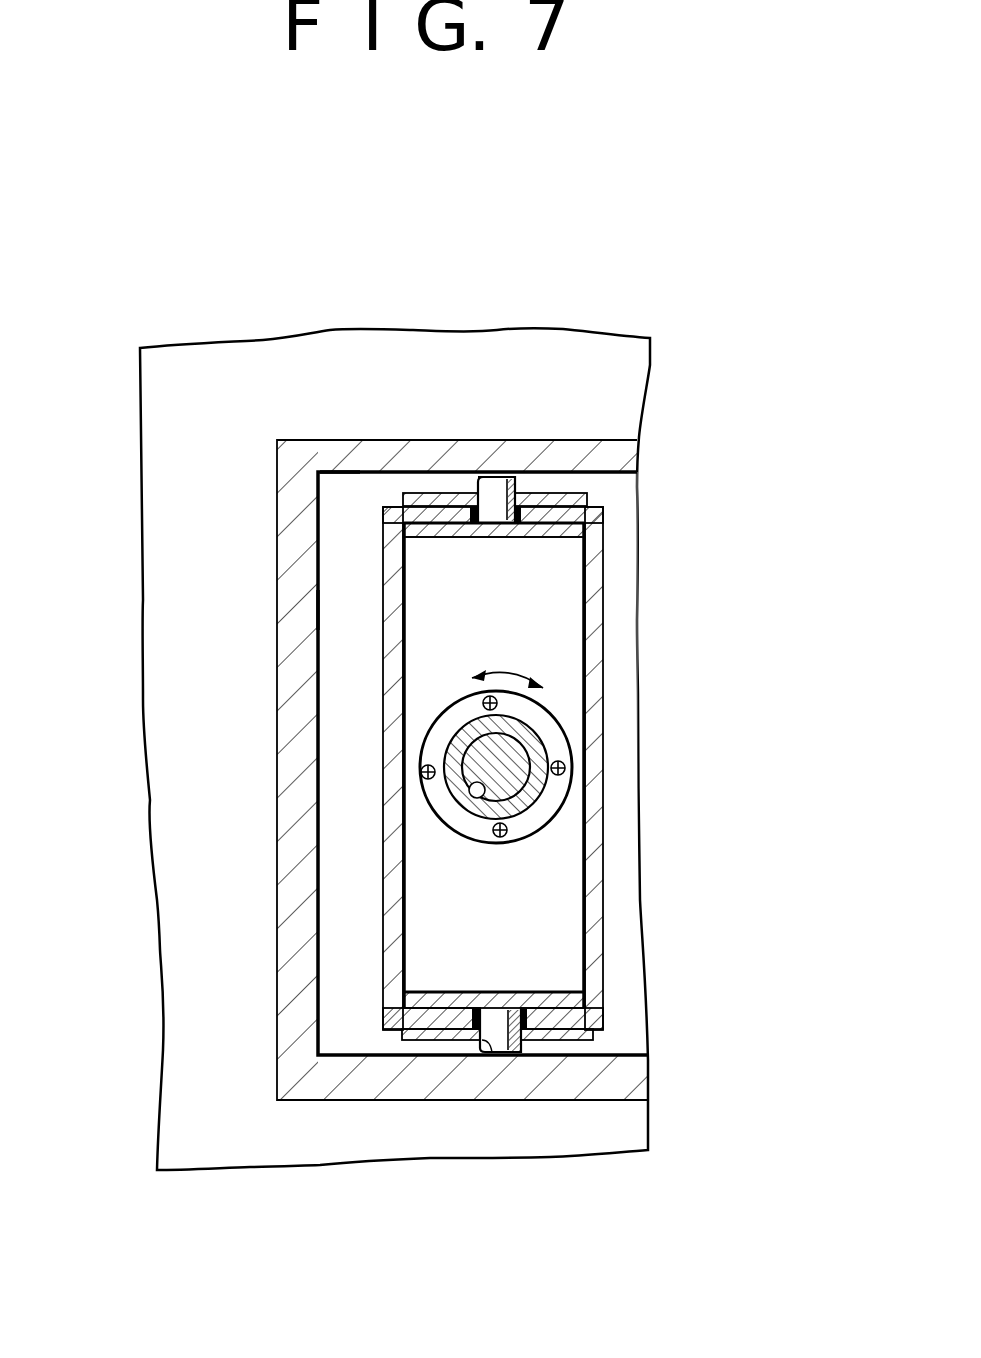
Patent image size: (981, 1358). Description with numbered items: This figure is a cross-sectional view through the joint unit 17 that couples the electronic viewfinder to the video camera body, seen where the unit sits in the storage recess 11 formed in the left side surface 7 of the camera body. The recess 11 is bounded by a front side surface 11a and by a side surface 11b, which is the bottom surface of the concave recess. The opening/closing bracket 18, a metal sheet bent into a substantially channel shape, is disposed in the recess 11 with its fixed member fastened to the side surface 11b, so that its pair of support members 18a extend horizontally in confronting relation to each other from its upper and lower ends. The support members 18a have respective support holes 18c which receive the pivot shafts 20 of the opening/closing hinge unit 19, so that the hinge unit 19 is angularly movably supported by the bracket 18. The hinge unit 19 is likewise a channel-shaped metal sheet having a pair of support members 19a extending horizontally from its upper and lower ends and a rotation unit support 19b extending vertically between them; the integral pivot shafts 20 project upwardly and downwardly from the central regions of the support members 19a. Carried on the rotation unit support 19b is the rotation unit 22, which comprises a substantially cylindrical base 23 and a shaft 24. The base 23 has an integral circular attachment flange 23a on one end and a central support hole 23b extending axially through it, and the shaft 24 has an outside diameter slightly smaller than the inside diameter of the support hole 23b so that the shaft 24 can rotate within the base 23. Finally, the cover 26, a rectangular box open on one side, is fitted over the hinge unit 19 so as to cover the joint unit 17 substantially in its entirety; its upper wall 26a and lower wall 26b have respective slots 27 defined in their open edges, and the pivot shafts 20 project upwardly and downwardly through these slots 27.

The left side surface 7 is at (182, 937).
The storage recess 11 is at (333, 745).
The front side surface 11a is at (316, 610).
The side surface 11b is at (337, 497).
The joint unit 17 is at (625, 538).
The opening/closing bracket 18 is at (590, 498).
The support members 18a is at (538, 493).
The support holes 18c is at (480, 475).
The opening/closing hinge unit 19 is at (406, 1060).
The support members 19a is at (565, 540).
The rotation unit support 19b is at (565, 852).
The pivot shafts 20 is at (500, 477).
The rotation unit 22 is at (456, 697).
The base 23 is at (447, 802).
The attachment flange 23a is at (530, 820).
The support hole 23b is at (482, 815).
The shaft 24 is at (538, 742).
The cover 26 is at (605, 720).
The upper wall 26a is at (390, 508).
The lower wall 26b is at (603, 1035).
The slots 27 is at (482, 530).